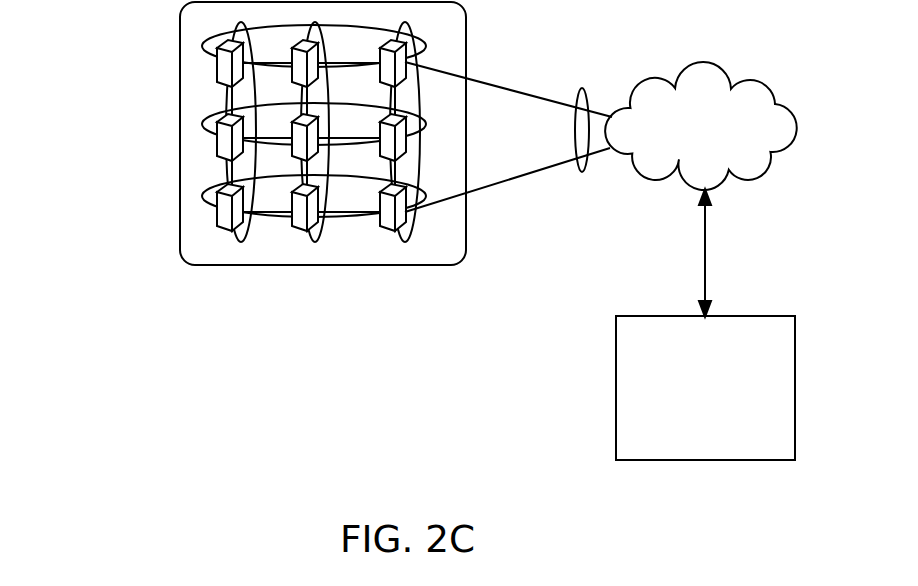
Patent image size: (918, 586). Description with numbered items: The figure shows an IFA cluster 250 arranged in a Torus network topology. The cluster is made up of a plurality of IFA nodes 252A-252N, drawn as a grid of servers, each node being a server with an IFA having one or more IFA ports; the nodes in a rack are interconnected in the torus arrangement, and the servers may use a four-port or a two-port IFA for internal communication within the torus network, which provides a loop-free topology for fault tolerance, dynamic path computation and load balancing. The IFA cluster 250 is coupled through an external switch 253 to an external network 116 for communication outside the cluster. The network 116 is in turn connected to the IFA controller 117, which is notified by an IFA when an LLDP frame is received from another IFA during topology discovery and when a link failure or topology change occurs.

The IFA cluster 250 is at (274, 215).
The IFA node 252A is at (217, 64).
The IFA node 252N is at (387, 232).
The external switch 253 is at (582, 88).
The network 116 is at (727, 154).
The IFA controller 117 is at (681, 418).